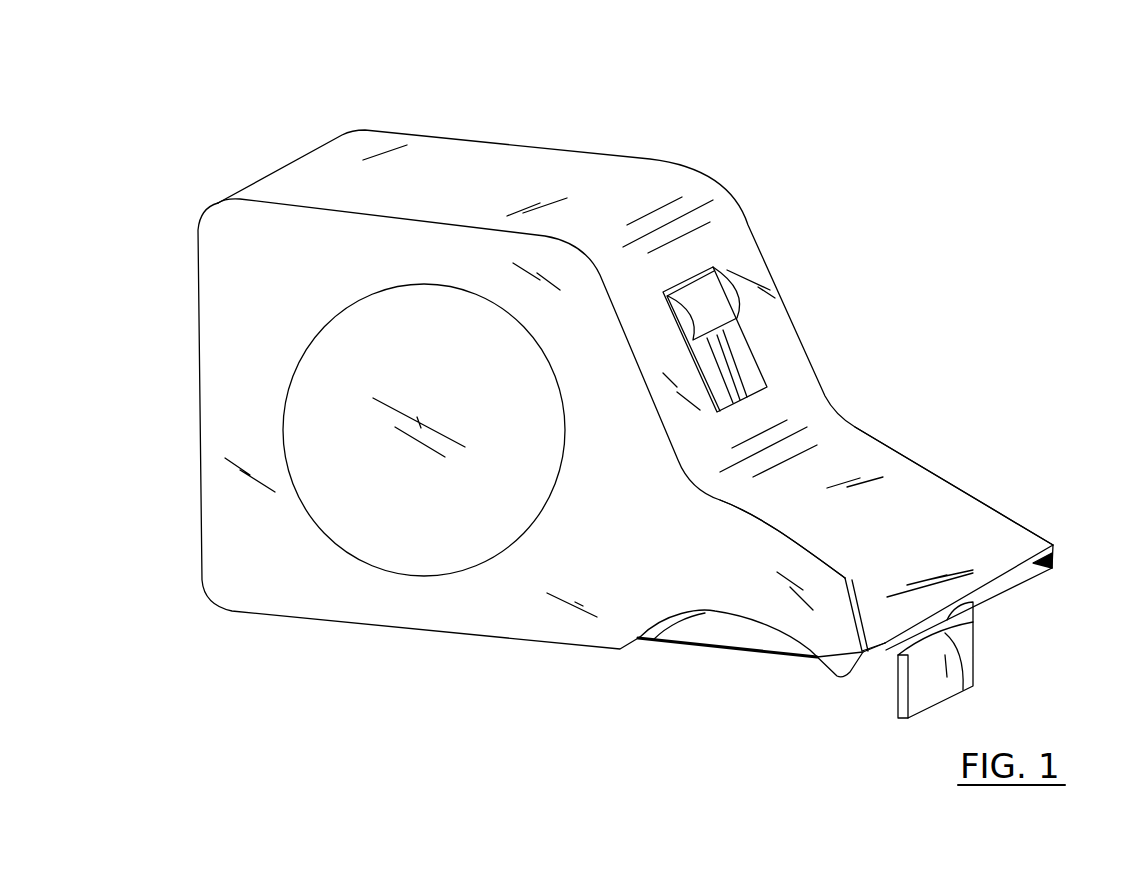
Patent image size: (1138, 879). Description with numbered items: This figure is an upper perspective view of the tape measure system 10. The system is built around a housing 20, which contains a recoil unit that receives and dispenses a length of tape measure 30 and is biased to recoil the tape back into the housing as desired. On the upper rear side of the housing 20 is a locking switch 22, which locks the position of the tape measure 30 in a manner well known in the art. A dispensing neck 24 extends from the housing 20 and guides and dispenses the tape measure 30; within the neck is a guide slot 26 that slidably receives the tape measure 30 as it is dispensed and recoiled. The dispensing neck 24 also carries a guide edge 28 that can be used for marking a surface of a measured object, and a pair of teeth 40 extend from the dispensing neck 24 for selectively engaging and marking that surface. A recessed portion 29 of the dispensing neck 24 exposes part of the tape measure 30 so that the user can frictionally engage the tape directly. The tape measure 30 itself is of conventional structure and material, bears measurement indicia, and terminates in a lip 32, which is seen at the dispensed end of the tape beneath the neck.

The tape measure system 10 is at (200, 163).
The housing 20 is at (750, 190).
The locking switch 22 is at (720, 287).
The dispensing neck 24 is at (927, 490).
The guide slot 26 is at (972, 610).
The guide edge 28 is at (1003, 572).
The recessed portion 29 is at (650, 640).
The tape measure 30 is at (777, 630).
The lip 32 is at (920, 684).
The teeth 40 is at (1055, 551).